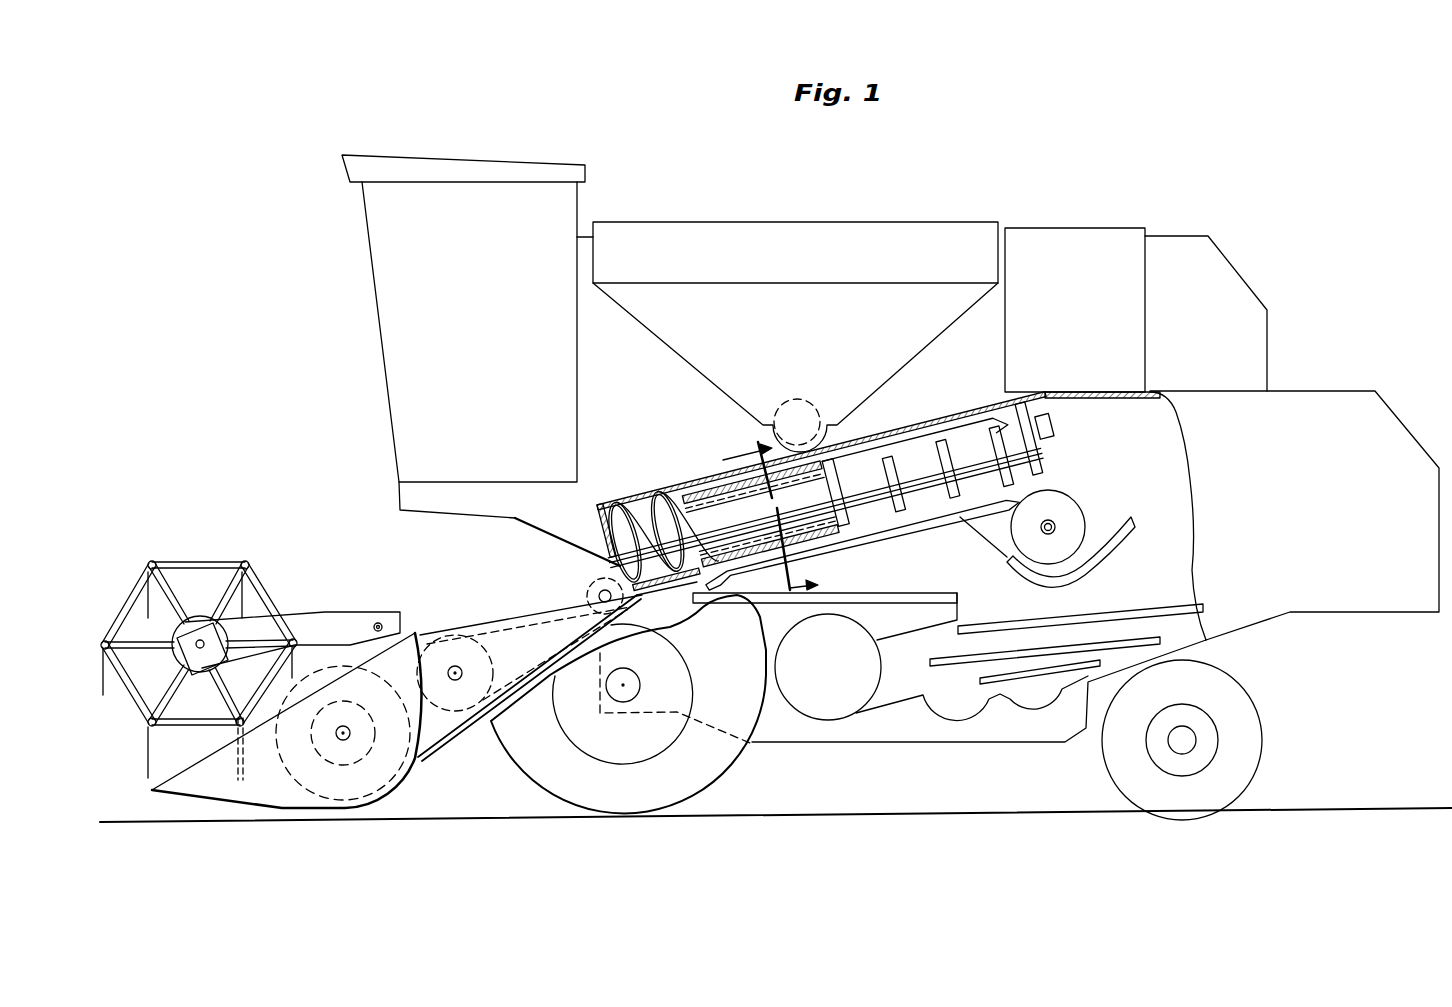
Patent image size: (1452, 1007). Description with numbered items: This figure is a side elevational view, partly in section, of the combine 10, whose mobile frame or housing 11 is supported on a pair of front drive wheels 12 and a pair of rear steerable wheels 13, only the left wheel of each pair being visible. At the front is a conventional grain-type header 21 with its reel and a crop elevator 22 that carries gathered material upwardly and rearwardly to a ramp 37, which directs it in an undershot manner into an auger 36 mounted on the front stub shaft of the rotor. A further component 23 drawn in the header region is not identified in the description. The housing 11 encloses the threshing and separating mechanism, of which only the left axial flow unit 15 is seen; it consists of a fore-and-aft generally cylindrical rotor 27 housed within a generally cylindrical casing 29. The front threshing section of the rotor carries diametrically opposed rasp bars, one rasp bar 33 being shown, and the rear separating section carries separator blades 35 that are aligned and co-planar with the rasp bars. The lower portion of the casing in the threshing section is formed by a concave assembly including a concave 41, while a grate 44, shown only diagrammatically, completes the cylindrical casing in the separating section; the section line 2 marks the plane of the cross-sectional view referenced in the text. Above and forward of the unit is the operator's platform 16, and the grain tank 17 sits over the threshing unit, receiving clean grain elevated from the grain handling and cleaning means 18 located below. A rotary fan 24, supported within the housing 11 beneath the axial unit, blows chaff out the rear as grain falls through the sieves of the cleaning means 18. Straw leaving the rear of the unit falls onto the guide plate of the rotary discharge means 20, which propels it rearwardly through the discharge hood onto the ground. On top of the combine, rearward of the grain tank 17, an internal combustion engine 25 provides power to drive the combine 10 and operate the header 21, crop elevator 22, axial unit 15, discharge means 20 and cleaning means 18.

The combine 10 is at (1131, 113).
The housing 11 is at (832, 747).
The front drive wheels 12 is at (628, 704).
The rear steerable wheels 13 is at (1182, 740).
The axial flow threshing and separating unit 15 is at (688, 470).
The operator's platform 16 is at (481, 360).
The grain tank 17 is at (795, 337).
The grain handling and cleaning means 18 is at (974, 625).
The rotary discharge means 20 is at (1080, 499).
The header 21 is at (298, 607).
The crop elevator 22 is at (529, 669).
The header auger 23 is at (287, 720).
The rotary fan 24 is at (828, 667).
The internal combustion engine 25 is at (1075, 310).
The rotor 27 is at (822, 492).
The casing 29 is at (905, 427).
The rasp bar 33 is at (823, 453).
The separator blades 35 is at (957, 432).
The auger 36 is at (628, 512).
The ramp 37 is at (645, 588).
The concave 41 is at (818, 552).
The grate 44 is at (917, 530).
The section line 2- 2 is at (758, 520).